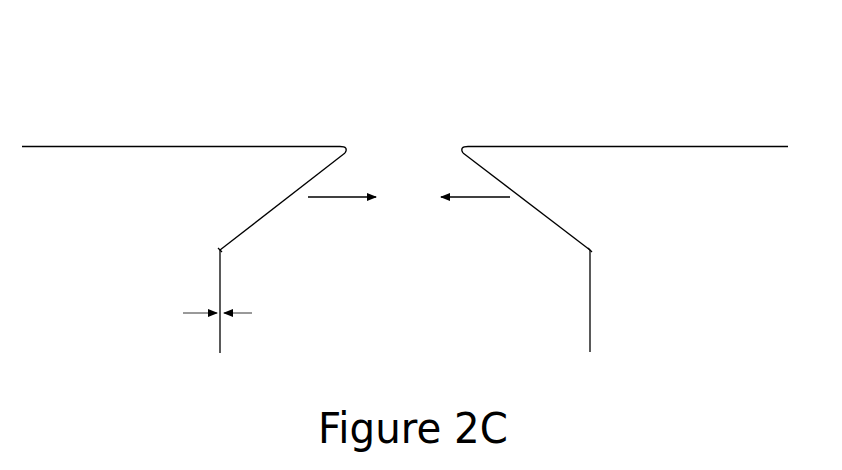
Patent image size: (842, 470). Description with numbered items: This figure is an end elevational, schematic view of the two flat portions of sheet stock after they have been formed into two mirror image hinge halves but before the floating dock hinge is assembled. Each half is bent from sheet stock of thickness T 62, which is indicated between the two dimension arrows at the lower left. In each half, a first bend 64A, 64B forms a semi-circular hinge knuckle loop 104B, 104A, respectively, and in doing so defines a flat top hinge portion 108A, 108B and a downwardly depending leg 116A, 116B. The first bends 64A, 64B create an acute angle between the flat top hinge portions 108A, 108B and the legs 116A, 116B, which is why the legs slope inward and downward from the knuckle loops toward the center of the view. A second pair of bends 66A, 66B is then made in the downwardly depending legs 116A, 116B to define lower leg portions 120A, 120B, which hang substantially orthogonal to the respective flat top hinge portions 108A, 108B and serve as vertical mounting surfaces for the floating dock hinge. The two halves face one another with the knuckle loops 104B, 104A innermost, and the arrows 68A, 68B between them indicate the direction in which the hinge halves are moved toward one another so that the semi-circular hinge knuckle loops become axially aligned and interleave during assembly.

The thickness 62 is at (277, 315).
The first bend 64A is at (345, 147).
The first bend 64B is at (462, 148).
The second bend 66A is at (218, 250).
The second bend 66B is at (592, 250).
The arrow 68A is at (343, 200).
The arrow 68B is at (473, 200).
The semi-circular hinge knuckle loop 104A is at (482, 157).
The semi-circular hinge knuckle loop 104B is at (326, 157).
The flat top hinge portion 108A is at (115, 146).
The flat top hinge portion 108B is at (688, 146).
The downwardly depending leg 116A is at (263, 215).
The downwardly depending leg 116B is at (570, 232).
The lower leg portion 120A is at (216, 288).
The lower leg portion 120B is at (592, 300).